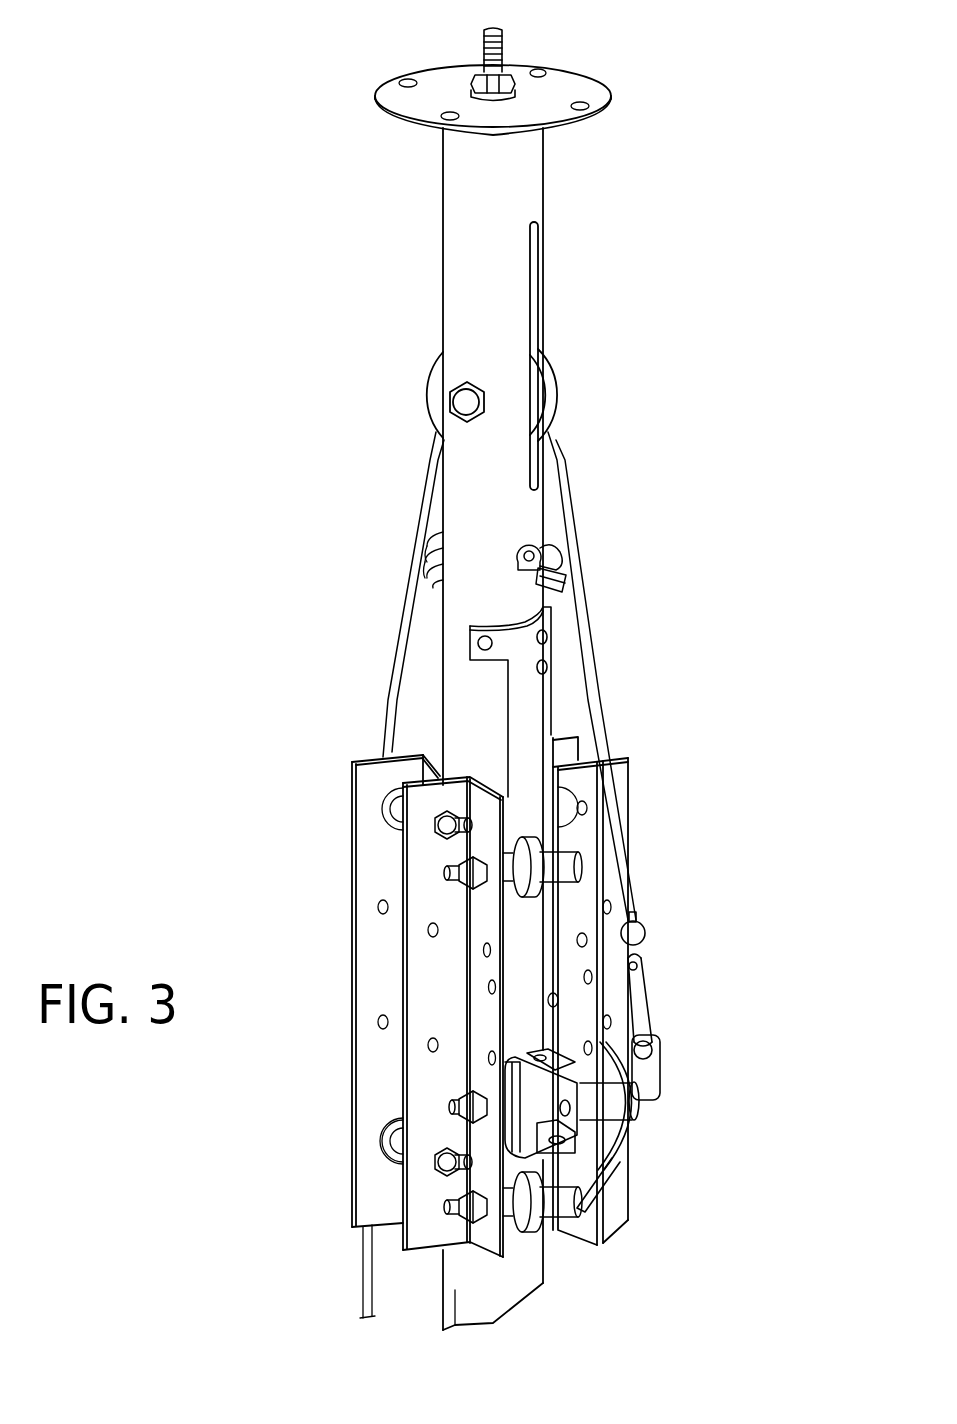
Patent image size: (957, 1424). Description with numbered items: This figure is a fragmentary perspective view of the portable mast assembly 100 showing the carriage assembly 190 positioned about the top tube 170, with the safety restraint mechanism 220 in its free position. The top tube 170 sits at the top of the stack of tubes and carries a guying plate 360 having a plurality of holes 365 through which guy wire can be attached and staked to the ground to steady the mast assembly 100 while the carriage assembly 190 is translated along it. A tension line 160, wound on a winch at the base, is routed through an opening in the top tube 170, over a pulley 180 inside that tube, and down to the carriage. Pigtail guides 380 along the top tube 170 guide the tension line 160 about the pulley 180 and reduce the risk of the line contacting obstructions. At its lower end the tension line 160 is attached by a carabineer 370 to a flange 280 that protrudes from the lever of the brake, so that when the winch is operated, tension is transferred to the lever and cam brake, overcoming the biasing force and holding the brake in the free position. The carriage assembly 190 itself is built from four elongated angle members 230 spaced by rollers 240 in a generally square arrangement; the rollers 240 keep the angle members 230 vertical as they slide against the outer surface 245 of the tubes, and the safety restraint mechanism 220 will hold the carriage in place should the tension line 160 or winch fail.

The portable mast assembly 100 is at (228, 186).
The tension line 160 is at (430, 490).
The top tube 170 is at (452, 320).
The pulley 180 is at (541, 383).
The carriage assembly 190 is at (315, 786).
The safety restraint mechanism 220 is at (660, 1170).
The elongated angle members 230 is at (423, 1097).
The rollers 240 is at (395, 1140).
The outer surface 245 is at (505, 1275).
The flange 280 is at (648, 1085).
The guying plate 360 is at (444, 90).
The holes 365 is at (538, 70).
The carabineer 370 is at (648, 1015).
The pigtail guides 380 is at (562, 576).